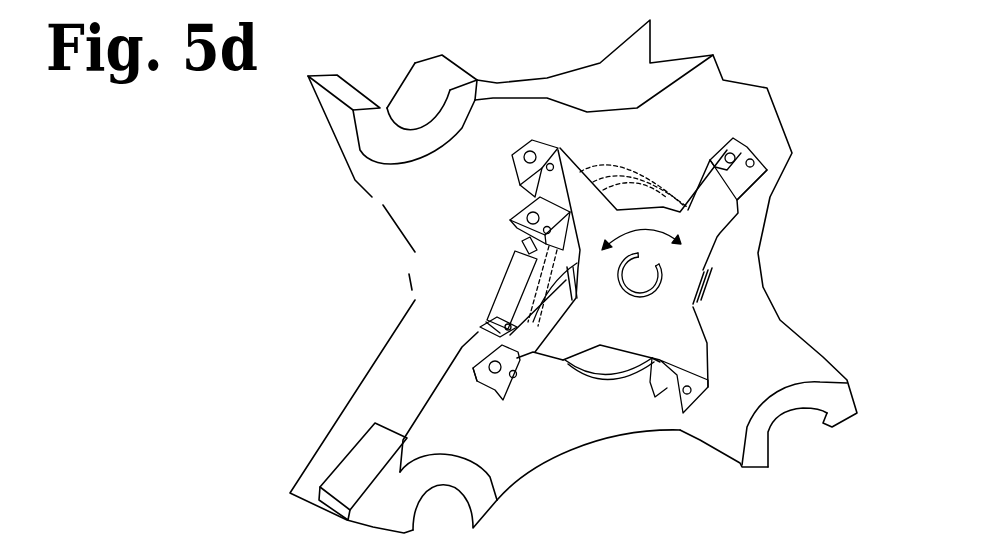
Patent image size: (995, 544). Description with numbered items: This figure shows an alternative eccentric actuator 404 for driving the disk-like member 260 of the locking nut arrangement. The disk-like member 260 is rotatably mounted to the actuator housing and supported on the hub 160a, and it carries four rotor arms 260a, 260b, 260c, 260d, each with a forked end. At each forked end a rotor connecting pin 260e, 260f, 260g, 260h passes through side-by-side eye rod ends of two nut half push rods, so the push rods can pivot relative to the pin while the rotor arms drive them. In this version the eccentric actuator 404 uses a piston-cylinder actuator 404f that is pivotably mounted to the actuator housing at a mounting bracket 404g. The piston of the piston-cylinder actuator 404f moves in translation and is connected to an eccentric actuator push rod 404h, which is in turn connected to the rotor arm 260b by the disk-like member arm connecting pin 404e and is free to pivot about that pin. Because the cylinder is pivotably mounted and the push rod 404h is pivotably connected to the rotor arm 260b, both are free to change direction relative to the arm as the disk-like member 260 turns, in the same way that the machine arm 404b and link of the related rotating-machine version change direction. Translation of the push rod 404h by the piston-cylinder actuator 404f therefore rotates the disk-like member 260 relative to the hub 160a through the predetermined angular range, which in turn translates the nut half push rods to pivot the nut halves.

The eccentric actuator 404 is at (455, 218).
The machine arm 404b is at (570, 267).
The disk-like member arm connecting pin 404e is at (546, 227).
The piston-cylinder actuator 404f is at (506, 292).
The mounting bracket 404g is at (494, 320).
The eccentric actuator push rod 404h is at (530, 250).
The hub 160a is at (659, 264).
The disk-like member 260 is at (659, 333).
The rotor arm 260a is at (718, 152).
The rotor arm 260b is at (536, 147).
The rotor arm 260c is at (485, 392).
The rotor arm 260d is at (657, 380).
The rotor connecting pin 260e is at (750, 160).
The rotor connecting pin 260f is at (554, 163).
The rotor connecting pin 260g is at (513, 378).
The rotor connecting pin 260h is at (689, 388).